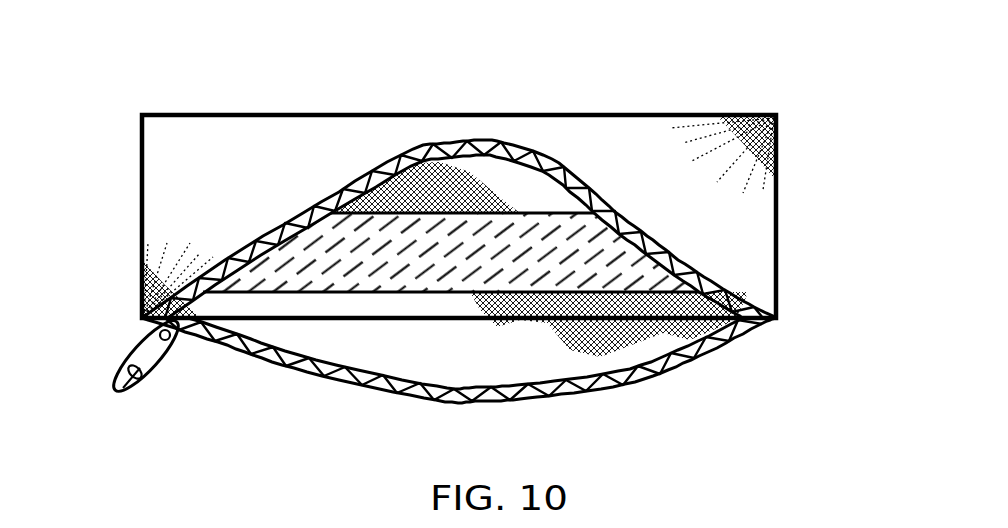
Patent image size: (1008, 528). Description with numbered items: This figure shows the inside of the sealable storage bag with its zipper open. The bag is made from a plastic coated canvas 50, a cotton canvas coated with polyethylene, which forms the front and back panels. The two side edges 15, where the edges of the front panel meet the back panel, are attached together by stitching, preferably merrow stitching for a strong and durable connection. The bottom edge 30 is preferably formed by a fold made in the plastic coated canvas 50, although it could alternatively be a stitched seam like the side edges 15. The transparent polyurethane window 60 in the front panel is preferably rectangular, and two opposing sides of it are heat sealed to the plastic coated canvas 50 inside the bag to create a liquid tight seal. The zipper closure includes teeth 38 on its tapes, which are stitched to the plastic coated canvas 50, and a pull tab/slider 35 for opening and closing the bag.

The side edges 15 is at (112, 210).
The bottom edge 30 is at (475, 87).
The pull tab/slider 35 is at (120, 392).
The teeth 38 is at (617, 402).
The plastic coated canvas 50 is at (459, 237).
The transparent polyurethane window 60 is at (348, 274).